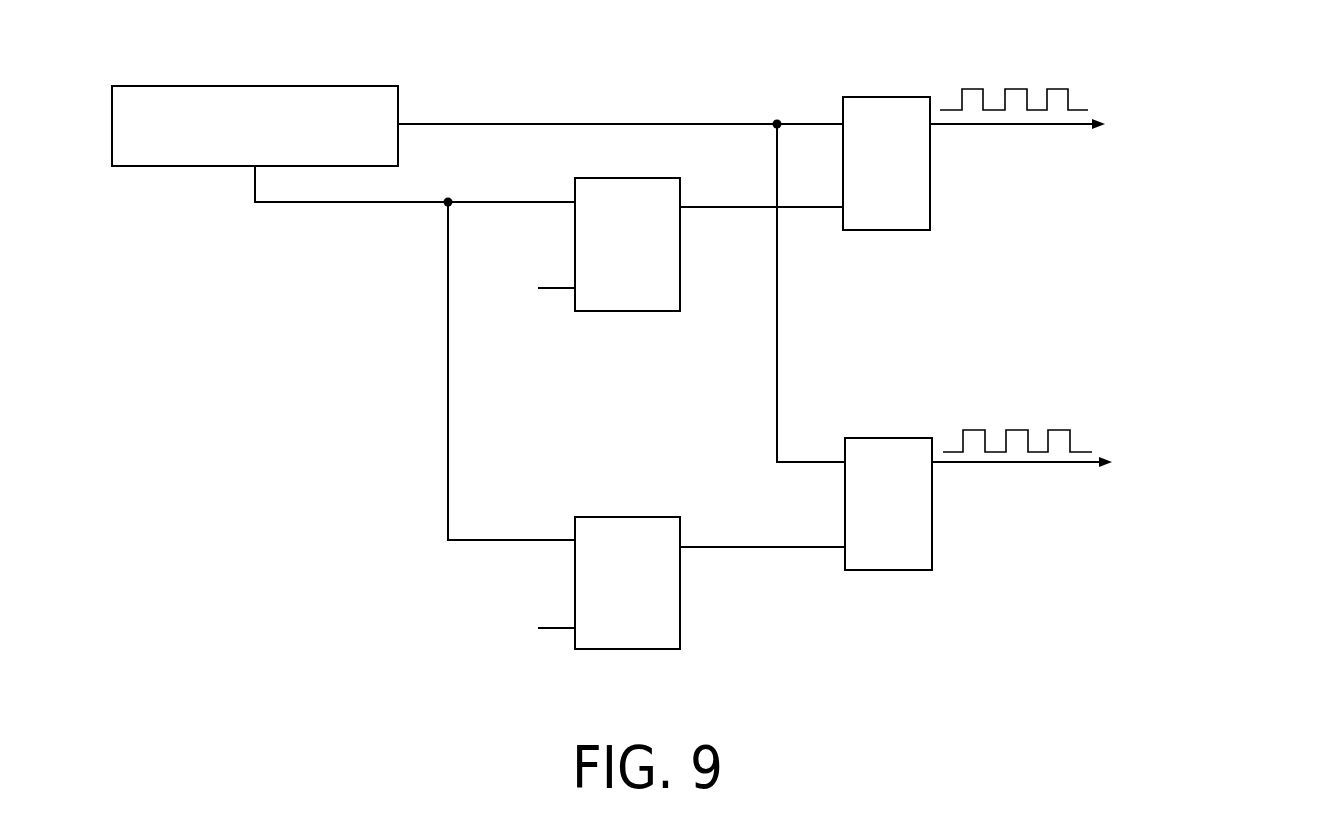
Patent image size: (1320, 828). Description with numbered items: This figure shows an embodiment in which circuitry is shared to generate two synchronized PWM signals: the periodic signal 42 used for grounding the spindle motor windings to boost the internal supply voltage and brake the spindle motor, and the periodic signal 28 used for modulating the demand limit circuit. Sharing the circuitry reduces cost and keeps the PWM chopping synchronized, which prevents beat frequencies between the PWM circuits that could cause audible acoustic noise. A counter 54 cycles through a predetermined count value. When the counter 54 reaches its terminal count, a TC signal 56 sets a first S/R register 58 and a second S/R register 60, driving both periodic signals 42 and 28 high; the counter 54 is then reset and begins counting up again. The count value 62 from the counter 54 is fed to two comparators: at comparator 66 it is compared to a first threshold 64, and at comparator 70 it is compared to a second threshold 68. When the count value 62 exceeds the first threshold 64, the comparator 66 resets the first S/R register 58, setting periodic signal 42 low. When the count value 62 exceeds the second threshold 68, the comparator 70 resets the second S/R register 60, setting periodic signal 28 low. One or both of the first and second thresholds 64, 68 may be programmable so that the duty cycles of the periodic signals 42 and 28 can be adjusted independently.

The counter 54 is at (257, 86).
The TC signal 56 is at (478, 124).
The count value 62 is at (330, 202).
The first threshold 64 is at (545, 290).
The comparator 66 is at (626, 311).
The second threshold 68 is at (550, 630).
The comparator 70 is at (627, 649).
The first S/R register 58 is at (887, 97).
The periodic signal 42 is at (1005, 126).
The second S/R register 60 is at (888, 438).
The periodic signal 28 is at (1008, 464).